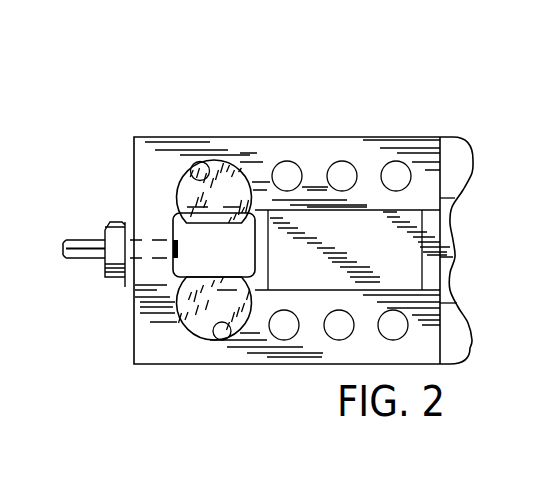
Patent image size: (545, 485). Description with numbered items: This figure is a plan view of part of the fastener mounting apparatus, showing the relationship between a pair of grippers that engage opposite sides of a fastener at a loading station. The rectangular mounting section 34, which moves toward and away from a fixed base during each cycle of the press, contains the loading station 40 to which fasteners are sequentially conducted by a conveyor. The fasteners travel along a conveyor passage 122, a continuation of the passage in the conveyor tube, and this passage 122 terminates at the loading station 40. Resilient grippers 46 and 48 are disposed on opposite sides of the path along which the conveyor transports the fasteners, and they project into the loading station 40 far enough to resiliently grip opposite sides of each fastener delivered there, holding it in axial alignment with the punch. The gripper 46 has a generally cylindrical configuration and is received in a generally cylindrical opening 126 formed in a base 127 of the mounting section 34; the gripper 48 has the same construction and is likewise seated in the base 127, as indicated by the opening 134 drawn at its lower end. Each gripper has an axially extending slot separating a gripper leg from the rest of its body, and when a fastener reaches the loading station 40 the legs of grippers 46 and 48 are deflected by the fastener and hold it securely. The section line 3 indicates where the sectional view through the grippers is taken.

The mounting section 34 is at (414, 117).
The loading station 40 is at (200, 263).
The gripper 46 is at (198, 193).
The gripper 48 is at (207, 312).
The conveyor passage 122 is at (407, 290).
The cylindrical opening 126 is at (188, 175).
The base 127 is at (322, 137).
The bore 134 is at (212, 328).
The section line 3- 3 is at (217, 142).